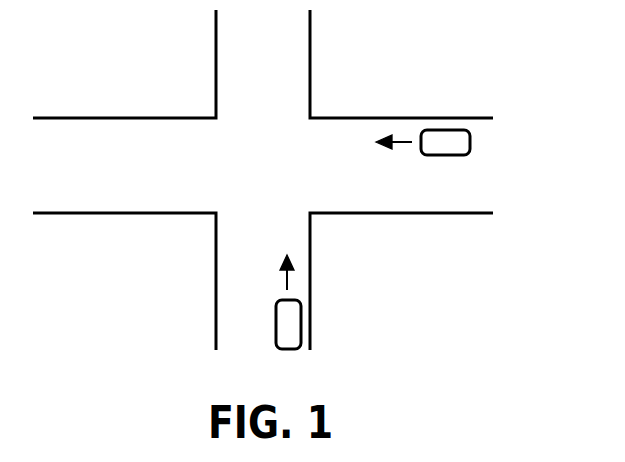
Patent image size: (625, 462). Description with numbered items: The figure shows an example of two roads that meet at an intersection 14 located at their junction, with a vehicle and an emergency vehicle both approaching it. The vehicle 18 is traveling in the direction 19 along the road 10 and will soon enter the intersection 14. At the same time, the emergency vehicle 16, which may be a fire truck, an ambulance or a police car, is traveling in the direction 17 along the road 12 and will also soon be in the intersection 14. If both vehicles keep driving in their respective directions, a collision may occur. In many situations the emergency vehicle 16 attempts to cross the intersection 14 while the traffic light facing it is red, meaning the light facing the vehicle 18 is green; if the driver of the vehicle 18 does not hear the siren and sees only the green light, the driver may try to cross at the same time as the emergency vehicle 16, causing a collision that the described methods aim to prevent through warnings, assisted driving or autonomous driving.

The road 10 is at (237, 270).
The road 12 is at (448, 197).
The intersection 14 is at (269, 157).
The emergency vehicle 16 is at (447, 141).
The direction 17 is at (396, 138).
The vehicle 18 is at (292, 323).
The direction 19 is at (292, 279).